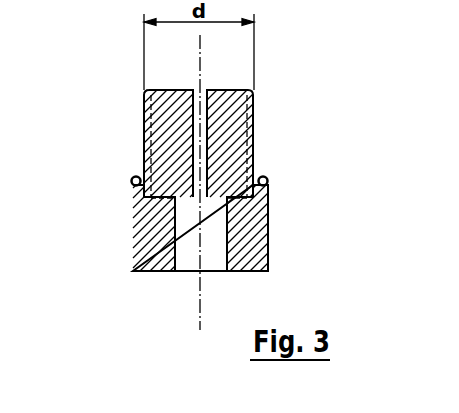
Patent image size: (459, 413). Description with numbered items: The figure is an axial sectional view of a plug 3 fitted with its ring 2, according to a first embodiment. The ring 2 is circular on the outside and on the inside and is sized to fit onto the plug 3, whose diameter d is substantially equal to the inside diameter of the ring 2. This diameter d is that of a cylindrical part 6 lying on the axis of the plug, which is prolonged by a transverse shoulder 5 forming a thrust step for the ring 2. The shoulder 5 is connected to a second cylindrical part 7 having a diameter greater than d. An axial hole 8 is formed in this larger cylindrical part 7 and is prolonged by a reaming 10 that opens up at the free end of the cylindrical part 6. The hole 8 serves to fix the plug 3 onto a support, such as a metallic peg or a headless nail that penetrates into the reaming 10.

The plug 3 is at (125, 104).
The transverse shoulder 5 is at (132, 176).
The reaming 10 is at (205, 90).
The cylindrical part 6 is at (254, 125).
The ring 2 is at (266, 176).
The cylindrical part 7 is at (268, 212).
The axial hole 8 is at (187, 256).